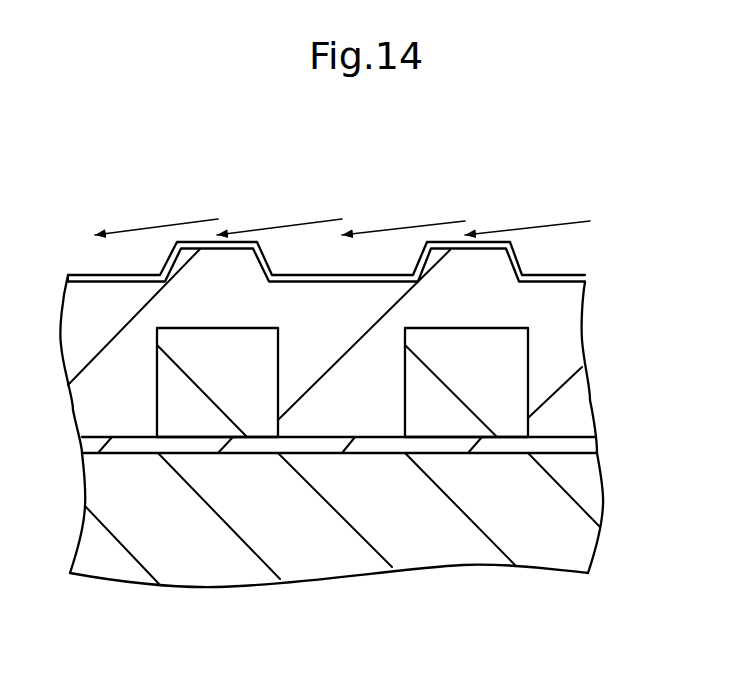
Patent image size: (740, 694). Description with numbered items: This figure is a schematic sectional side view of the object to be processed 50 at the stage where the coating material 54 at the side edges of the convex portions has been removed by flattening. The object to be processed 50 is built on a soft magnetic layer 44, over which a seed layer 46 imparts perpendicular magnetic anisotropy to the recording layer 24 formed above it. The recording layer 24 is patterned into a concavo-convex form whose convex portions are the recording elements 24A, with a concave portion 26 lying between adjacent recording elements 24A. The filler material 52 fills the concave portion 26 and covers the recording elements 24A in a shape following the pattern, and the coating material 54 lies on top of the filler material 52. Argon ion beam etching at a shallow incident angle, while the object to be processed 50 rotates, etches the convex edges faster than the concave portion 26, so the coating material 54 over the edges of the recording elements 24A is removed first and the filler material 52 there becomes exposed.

The object to be processed 50 is at (358, 170).
The concave portion 26 is at (347, 312).
The recording element 24A is at (472, 340).
The coating material 54 is at (290, 278).
The filler material 52 is at (582, 338).
The recording layer 24 is at (597, 378).
The seed layer 46 is at (597, 442).
The soft magnetic layer 44 is at (603, 505).